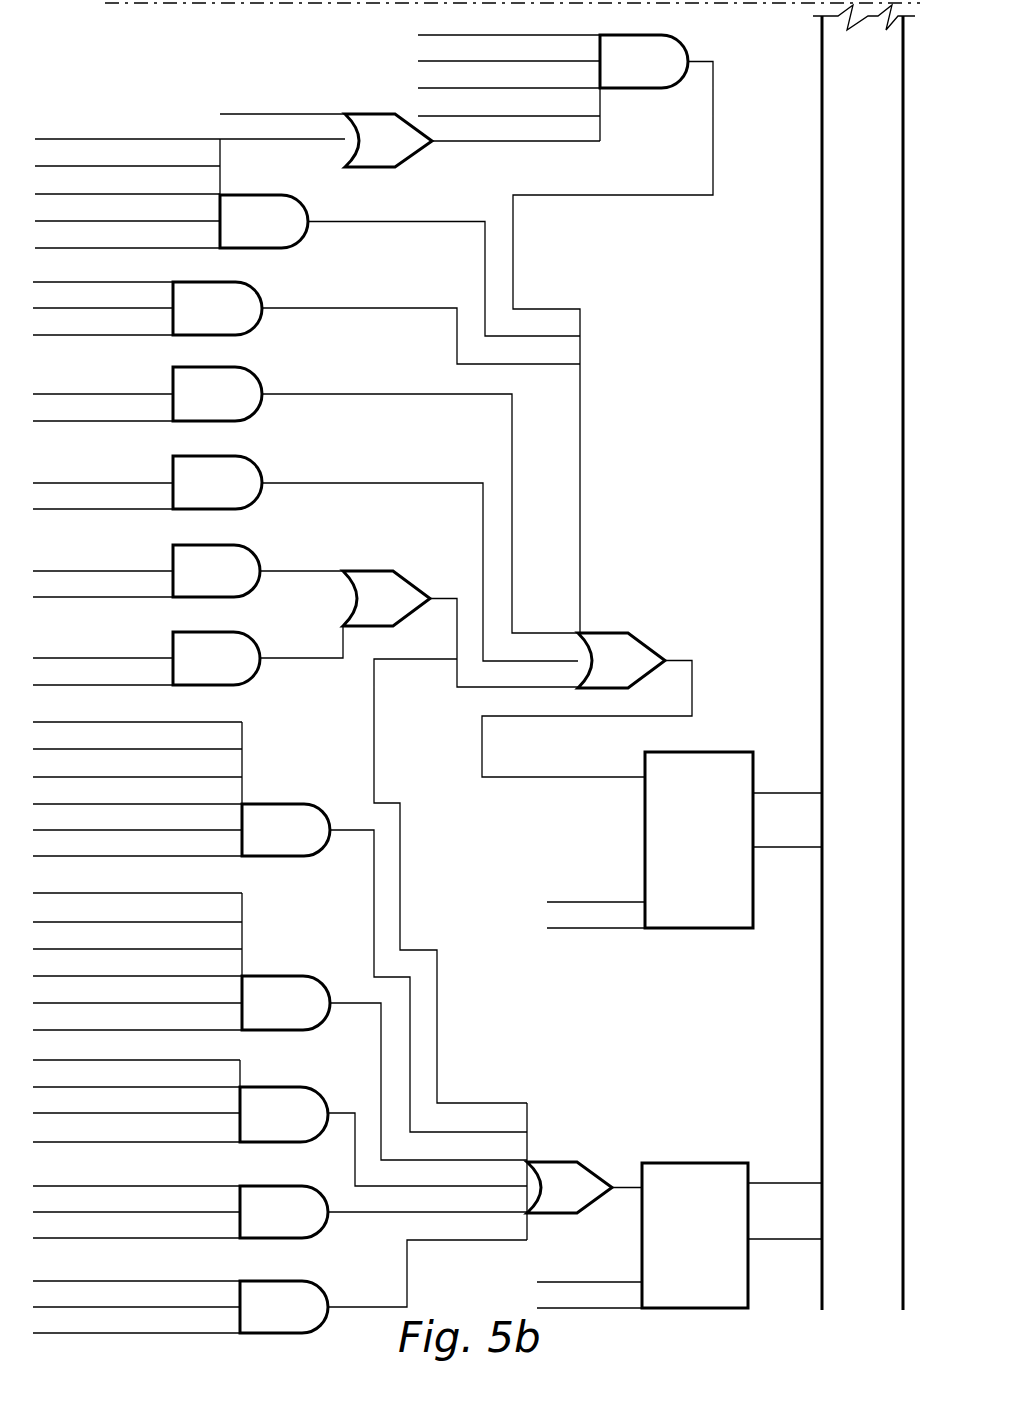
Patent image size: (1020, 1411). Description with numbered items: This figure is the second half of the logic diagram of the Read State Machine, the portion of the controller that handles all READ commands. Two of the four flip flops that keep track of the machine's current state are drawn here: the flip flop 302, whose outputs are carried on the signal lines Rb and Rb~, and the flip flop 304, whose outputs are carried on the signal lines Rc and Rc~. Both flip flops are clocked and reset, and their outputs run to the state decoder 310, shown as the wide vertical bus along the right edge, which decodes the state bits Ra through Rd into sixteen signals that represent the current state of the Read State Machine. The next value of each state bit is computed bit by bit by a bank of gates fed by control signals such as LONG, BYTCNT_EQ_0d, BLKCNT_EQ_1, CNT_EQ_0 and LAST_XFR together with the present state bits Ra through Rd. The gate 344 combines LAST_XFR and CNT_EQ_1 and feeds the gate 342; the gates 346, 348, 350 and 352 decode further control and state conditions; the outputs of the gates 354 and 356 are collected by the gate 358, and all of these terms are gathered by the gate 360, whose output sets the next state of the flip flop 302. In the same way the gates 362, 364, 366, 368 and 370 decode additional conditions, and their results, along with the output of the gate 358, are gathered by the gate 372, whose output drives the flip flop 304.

The flip flop 302 is at (645, 832).
The flip flop 304 is at (642, 1232).
The state decoder 310 is at (822, 442).
The gate 342 is at (688, 40).
The gate 344 is at (383, 112).
The gate 346 is at (302, 242).
The gate 348 is at (218, 282).
The gate 350 is at (218, 367).
The gate 352 is at (218, 456).
The gate 354 is at (218, 545).
The gate 356 is at (218, 632).
The gate 358 is at (372, 570).
The gate 360 is at (608, 633).
The gate 362 is at (270, 804).
The gate 364 is at (270, 976).
The gate 366 is at (260, 1087).
The gate 368 is at (260, 1186).
The gate 370 is at (260, 1281).
The gate 372 is at (560, 1162).